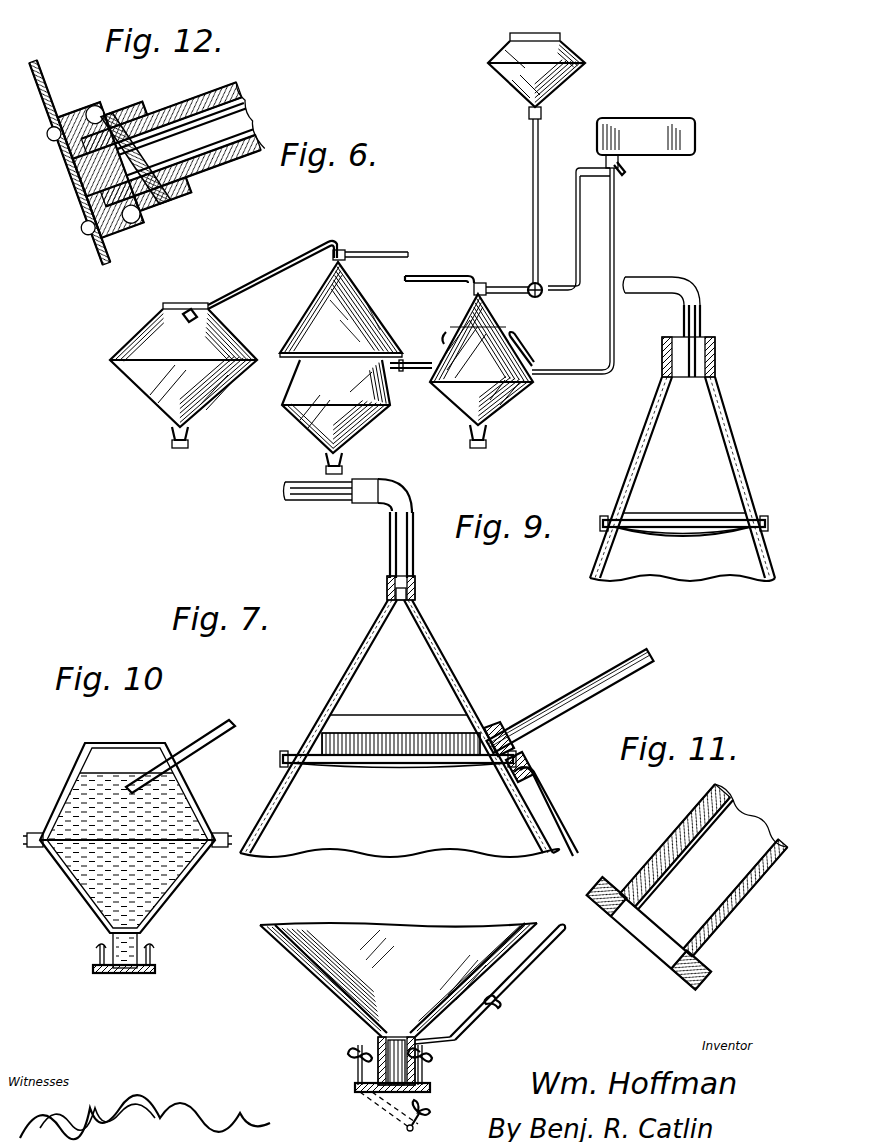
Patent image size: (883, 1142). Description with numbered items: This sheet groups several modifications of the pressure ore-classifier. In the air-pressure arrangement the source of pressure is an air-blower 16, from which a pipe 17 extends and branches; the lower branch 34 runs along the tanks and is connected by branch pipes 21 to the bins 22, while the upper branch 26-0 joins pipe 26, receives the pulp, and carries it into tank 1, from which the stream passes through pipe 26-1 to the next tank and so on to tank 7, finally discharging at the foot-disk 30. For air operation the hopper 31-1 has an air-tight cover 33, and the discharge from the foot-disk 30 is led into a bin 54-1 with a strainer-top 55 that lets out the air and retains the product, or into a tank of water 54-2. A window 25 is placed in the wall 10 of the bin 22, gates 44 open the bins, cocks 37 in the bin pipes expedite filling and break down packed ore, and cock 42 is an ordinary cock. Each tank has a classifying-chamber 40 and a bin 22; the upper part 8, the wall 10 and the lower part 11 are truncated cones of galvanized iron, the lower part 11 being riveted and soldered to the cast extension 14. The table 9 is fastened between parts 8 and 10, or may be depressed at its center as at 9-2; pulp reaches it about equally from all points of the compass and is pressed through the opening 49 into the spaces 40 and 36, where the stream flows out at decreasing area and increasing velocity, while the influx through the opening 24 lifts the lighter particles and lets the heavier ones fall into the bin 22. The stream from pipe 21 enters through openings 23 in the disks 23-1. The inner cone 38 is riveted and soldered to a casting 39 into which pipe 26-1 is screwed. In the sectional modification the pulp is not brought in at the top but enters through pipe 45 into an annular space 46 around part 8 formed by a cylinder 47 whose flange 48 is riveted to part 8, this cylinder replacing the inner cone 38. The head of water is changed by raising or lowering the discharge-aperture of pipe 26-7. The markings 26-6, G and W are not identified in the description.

In FIG. 6, the tank 1 is at (463, 458).
In FIG. 6, the tank 7 is at (341, 368).
In FIG. 7, the upper part 8 is at (348, 676).
In FIG. 7, the table 9 is at (455, 765).
In FIG. 9, the table depressed in its center 9-2 is at (745, 534).
In FIG. 12, the wall of bin 10 is at (42, 72).
In FIG. 6, the lower part 11 is at (467, 400).
In FIG. 6, the cast extension 14 is at (469, 434).
In FIG. 7, the cast extension 14 is at (378, 1050).
In FIG. 6, the air-blower 16 is at (646, 136).
In FIG. 6, the pipe 17 is at (606, 160).
In FIG. 12, the branch pipe 21 is at (233, 107).
In FIG. 6, the branch pipe 21 is at (531, 349).
In FIG. 7, the branch pipe 21 is at (547, 811).
In FIG. 6, the bin 22 is at (481, 359).
In FIG. 9, the bin 22 is at (734, 556).
In FIG. 7, the bin 22 is at (398, 933).
In FIG. 12, the openings 23 is at (118, 166).
In FIG. 7, the openings 23 is at (522, 784).
In FIG. 12, the disks 23-1 is at (200, 194).
In FIG. 7, the disks 23-1 is at (538, 768).
In FIG. 9, the opening 24 is at (678, 536).
In FIG. 7, the opening 24 is at (400, 765).
In FIG. 6, the window 25 is at (446, 336).
In FIG. 6, the pipe 26 is at (580, 222).
In FIG. 6, the upper branch pipe 26-0 is at (508, 281).
In FIG. 6, the pipe 26-1 is at (450, 276).
In FIG. 9, the pipe 26-1 is at (669, 316).
In FIG. 6, the pipe branch 26-6 is at (393, 252).
In FIG. 10, the discharge pipe 26-7 is at (188, 754).
In FIG. 11, the discharge pipe 26-7 is at (700, 915).
In FIG. 6, the foot-disk 30 is at (150, 323).
In FIG. 10, the foot-disk 30 is at (118, 787).
In FIG. 11, the foot-disk 30 is at (672, 958).
In FIG. 6, the hopper 31-1 is at (512, 93).
In FIG. 6, the air-tight cover 33 is at (530, 33).
In FIG. 6, the lower branch pipe 34 is at (487, 358).
In FIG. 9, the space 36 is at (736, 420).
In FIG. 7, the space 36 is at (399, 728).
In FIG. 7, the cocks 37 is at (497, 1000).
In FIG. 9, the inner cone 38 is at (742, 450).
In FIG. 7, the casting 39 is at (416, 590).
In FIG. 6, the classifying-chamber 40 is at (481, 317).
In FIG. 9, the classifying-chamber 40 is at (684, 501).
In FIG. 7, the classifying-chamber 40 is at (398, 703).
In FIG. 6, the cock 42 is at (626, 172).
In FIG. 6, the gates 44 is at (486, 444).
In FIG. 7, the gates 44 is at (430, 1088).
In FIG. 7, the pipe 45 is at (556, 700).
In FIG. 7, the annular space 46 is at (300, 750).
In FIG. 7, the cylinder 47 is at (487, 765).
In FIG. 7, the flange 48 is at (503, 722).
In FIG. 9, the opening 49 is at (757, 518).
In FIG. 7, the opening 49 is at (313, 765).
In FIG. 6, the bin 54-1 is at (184, 341).
In FIG. 10, the tank of water 54-2 is at (196, 806).
In FIG. 6, the strainer-top 55 is at (190, 300).
In FIG. 7, the gasket G is at (421, 699).
In FIG. 7, the water W is at (420, 763).